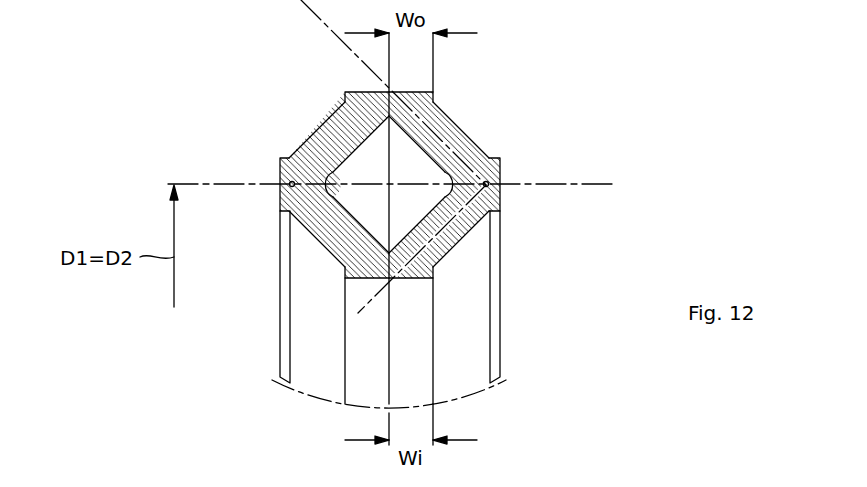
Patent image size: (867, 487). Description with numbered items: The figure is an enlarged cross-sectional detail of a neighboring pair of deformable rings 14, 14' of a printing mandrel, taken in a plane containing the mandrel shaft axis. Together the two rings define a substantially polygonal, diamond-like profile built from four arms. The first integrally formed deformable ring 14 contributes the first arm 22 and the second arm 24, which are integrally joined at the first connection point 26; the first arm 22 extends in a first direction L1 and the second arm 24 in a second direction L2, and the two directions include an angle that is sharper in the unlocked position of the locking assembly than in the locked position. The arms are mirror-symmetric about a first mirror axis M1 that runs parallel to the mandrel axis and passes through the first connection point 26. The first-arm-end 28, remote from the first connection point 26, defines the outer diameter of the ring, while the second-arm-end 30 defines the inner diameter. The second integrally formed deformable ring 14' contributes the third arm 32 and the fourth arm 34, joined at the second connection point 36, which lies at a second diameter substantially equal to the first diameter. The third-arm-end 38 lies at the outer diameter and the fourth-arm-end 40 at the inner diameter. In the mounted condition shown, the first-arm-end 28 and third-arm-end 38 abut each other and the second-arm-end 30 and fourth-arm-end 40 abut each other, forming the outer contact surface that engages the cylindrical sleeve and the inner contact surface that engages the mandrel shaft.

The deformable ring 14 is at (506, 321).
The deformable ring 14' is at (271, 322).
The first arm 22 is at (450, 133).
The second arm 24 is at (452, 238).
The first connection point 26 is at (500, 176).
The first-arm-end 28 is at (412, 92).
The second-arm-end 30 is at (413, 279).
The third arm 32 is at (330, 132).
The fourth arm 34 is at (330, 235).
The second connection point 36 is at (290, 183).
The third-arm-end 38 is at (367, 91).
The fourth-arm-end 40 is at (367, 279).
The first direction L1 is at (310, 8).
The second direction L2 is at (369, 306).
The first mirror axis M1 is at (593, 184).